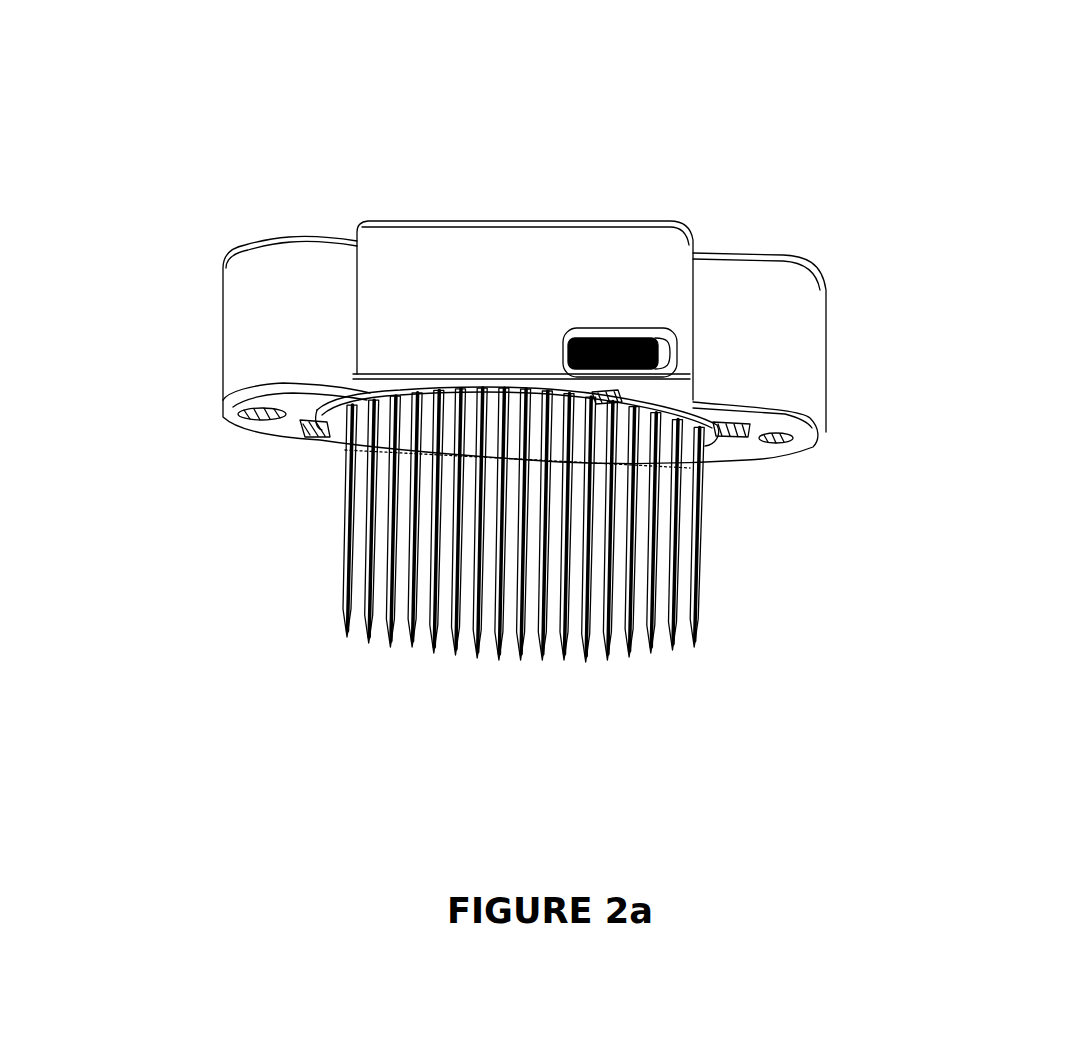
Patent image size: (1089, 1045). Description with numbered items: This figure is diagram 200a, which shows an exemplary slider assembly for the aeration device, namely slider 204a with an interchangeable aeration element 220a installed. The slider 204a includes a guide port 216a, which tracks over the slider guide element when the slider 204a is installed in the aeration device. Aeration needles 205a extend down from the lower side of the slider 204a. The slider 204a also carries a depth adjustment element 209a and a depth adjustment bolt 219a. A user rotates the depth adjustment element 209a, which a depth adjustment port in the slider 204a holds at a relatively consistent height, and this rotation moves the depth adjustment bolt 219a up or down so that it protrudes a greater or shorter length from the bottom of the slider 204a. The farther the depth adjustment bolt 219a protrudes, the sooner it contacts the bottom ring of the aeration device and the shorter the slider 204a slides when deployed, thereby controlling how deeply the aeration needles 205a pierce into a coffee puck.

The diagram 200a is at (978, 93).
The slider 204a is at (807, 408).
The aeration needles 205a is at (773, 602).
The depth adjustment element 209a is at (638, 345).
The guide port 216a is at (795, 438).
The depth adjustment bolt 219a is at (618, 400).
The interchangeable aeration element 220a is at (245, 528).